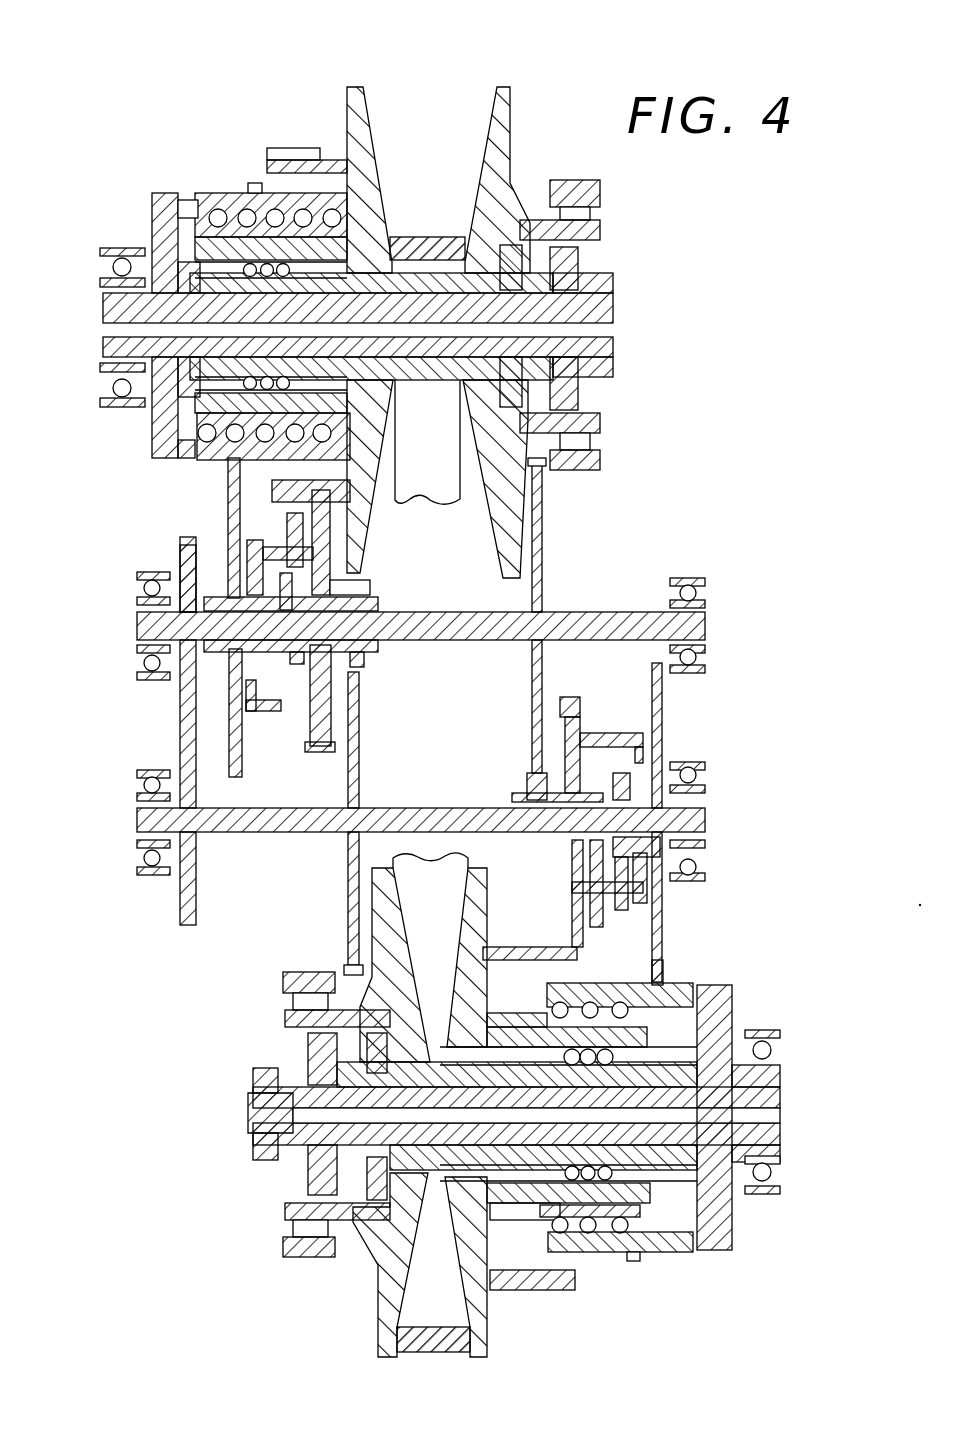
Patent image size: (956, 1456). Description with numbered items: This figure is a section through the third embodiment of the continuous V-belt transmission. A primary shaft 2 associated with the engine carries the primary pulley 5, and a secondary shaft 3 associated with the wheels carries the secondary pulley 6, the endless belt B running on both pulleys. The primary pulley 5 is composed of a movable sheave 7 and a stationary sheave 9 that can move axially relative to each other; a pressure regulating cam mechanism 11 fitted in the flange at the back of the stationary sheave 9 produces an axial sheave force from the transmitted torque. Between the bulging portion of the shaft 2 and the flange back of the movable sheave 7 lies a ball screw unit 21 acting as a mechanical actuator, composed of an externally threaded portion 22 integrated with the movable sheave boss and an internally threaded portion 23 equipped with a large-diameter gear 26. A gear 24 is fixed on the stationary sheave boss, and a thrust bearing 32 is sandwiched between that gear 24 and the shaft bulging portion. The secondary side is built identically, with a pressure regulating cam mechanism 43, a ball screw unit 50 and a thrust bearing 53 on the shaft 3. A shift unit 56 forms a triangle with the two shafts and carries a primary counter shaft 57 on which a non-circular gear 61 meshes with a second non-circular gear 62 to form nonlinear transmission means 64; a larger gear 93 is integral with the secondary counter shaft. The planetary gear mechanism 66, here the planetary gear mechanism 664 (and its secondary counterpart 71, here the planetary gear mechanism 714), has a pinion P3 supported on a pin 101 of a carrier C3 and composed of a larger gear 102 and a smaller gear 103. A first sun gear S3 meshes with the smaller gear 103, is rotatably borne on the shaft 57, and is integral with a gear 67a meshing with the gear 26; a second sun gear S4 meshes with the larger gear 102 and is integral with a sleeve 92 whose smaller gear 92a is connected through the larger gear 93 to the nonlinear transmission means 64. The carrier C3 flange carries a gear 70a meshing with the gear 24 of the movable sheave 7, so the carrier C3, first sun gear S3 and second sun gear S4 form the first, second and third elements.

The primary shaft 2 is at (612, 330).
The secondary shaft 3 is at (776, 1112).
The primary pulley 5 is at (452, 292).
The secondary pulley 6 is at (418, 1362).
The movable sheave 7 is at (357, 90).
The stationary sheave 9 is at (505, 97).
The endless belt B is at (425, 245).
The pressure regulating cam mechanism 11 is at (617, 252).
The ball screw unit 21 is at (223, 267).
The externally threaded portion 22 is at (158, 200).
The internally threaded portion 23 is at (212, 200).
The gear 24 is at (292, 150).
The large-diameter gear 26 is at (255, 185).
The thrust bearing 32 is at (175, 455).
The planetary gear mechanism 66 is at (191, 432).
The planetary gear mechanism 664 is at (140, 485).
The shift unit 56 is at (382, 714).
The primary counter shaft 57 is at (582, 620).
The non-circular gear 61 is at (200, 562).
The non-circular gear 62 is at (180, 900).
The nonlinear transmission means 64 is at (150, 730).
The gear 67a is at (237, 780).
The gear 70a is at (328, 748).
The planetary gear mechanism 71 is at (720, 824).
The planetary gear mechanism 714 is at (700, 730).
The sleeve 92 is at (380, 598).
The smaller gear 92a is at (362, 655).
The larger gear 93 is at (360, 752).
The pin 101 is at (170, 576).
The larger gear 102 is at (303, 517).
The smaller gear 103 is at (273, 537).
The pinion P3 is at (320, 545).
The carrier C3 is at (335, 588).
The first sun gear S3 is at (289, 690).
The second sun gear S4 is at (305, 672).
The pressure regulating cam mechanism 43 is at (295, 1182).
The ball screw unit 50 is at (613, 1270).
The thrust bearing 53 is at (700, 1252).